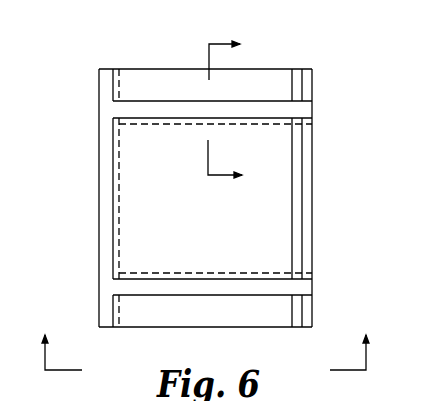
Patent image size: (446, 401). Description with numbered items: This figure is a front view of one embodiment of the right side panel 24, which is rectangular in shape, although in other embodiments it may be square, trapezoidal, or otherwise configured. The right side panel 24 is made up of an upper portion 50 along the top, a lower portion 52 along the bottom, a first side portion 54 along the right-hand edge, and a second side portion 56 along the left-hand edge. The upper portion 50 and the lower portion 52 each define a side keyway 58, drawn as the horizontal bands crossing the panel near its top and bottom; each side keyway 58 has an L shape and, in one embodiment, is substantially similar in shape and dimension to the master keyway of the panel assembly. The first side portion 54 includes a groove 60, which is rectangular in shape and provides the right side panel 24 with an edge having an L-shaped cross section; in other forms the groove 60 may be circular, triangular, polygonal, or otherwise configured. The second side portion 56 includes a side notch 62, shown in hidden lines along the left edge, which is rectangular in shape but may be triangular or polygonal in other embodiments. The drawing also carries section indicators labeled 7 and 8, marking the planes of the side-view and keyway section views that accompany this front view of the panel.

The right side panel 24 is at (255, 243).
The upper portion 50 is at (235, 89).
The lower portion 52 is at (222, 312).
The first side portion 54 is at (313, 173).
The second side portion 56 is at (107, 185).
The side keyway 58 is at (298, 109).
The groove 60 is at (298, 317).
The side notch 62 is at (105, 312).
The section line 8 is at (211, 114).
The section line 7 is at (207, 368).